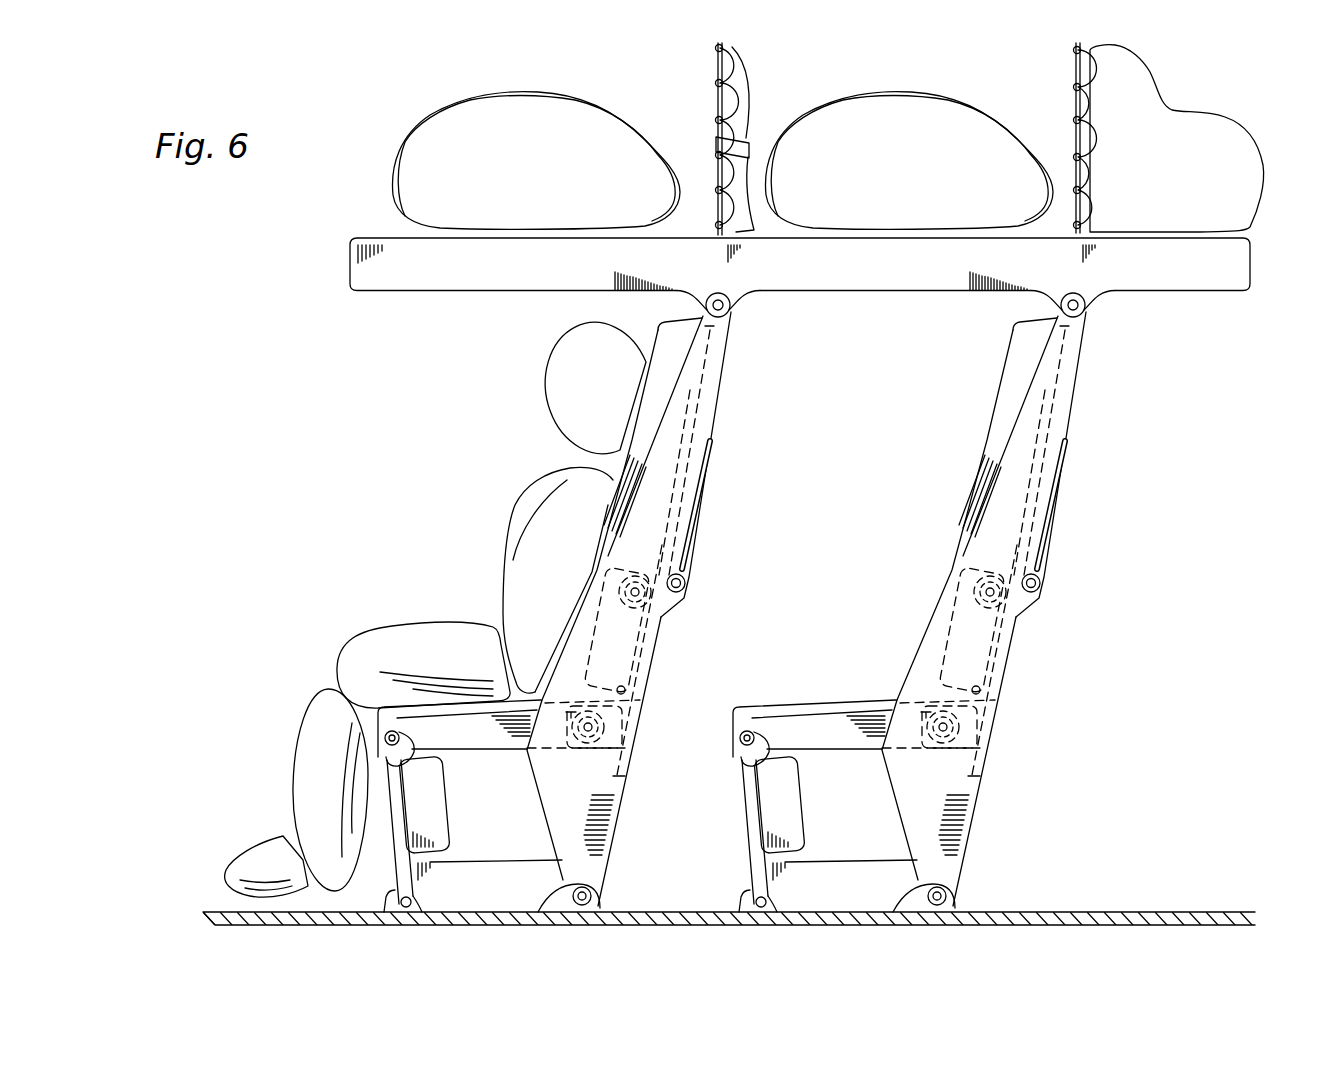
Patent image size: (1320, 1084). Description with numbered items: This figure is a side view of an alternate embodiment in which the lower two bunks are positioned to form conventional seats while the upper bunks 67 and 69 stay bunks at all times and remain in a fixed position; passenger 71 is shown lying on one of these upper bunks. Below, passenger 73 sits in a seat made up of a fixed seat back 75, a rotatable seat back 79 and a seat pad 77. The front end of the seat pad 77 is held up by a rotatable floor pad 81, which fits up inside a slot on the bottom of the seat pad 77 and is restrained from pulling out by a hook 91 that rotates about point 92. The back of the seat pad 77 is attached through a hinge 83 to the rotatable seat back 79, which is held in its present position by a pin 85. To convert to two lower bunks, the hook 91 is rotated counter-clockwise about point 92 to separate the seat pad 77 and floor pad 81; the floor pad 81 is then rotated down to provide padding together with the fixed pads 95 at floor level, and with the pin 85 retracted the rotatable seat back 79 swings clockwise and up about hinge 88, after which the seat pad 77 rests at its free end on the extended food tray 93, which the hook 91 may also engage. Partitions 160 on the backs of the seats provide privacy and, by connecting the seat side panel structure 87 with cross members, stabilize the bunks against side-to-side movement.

The upper bunk 67 is at (912, 62).
The upper bunk 69 is at (1168, 116).
The passenger 71 is at (832, 103).
The passenger 73 is at (543, 515).
The fixed seat back 75 is at (1025, 345).
The seat pad 77 is at (833, 723).
The rotatable seat back 79 is at (1002, 618).
The rotatable floor pad 81 is at (760, 808).
The hinge 83 is at (947, 740).
The pin 85 is at (972, 682).
The seat side panel structure 87 is at (935, 835).
The hinge 88 is at (982, 590).
The hook 91 is at (757, 767).
The point 92 is at (750, 728).
The food tray 93 is at (702, 510).
The fixed pads 95 is at (843, 887).
The partitions 160 is at (627, 710).